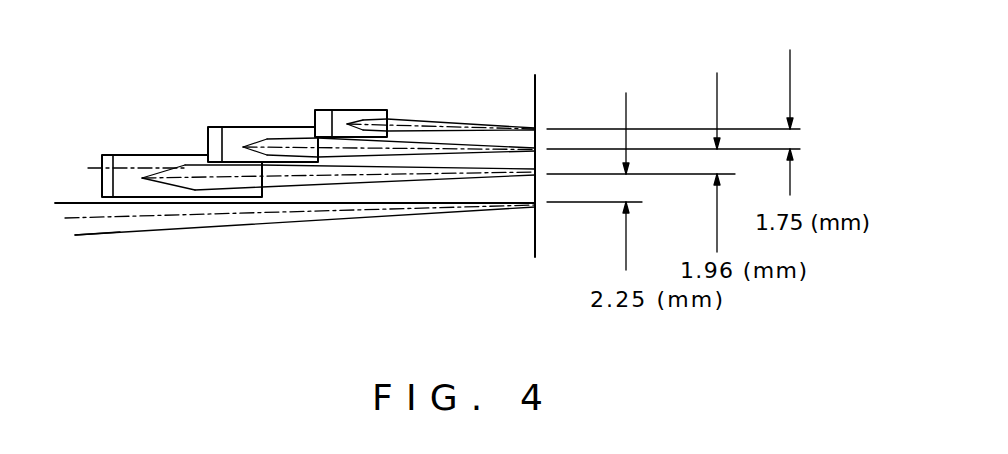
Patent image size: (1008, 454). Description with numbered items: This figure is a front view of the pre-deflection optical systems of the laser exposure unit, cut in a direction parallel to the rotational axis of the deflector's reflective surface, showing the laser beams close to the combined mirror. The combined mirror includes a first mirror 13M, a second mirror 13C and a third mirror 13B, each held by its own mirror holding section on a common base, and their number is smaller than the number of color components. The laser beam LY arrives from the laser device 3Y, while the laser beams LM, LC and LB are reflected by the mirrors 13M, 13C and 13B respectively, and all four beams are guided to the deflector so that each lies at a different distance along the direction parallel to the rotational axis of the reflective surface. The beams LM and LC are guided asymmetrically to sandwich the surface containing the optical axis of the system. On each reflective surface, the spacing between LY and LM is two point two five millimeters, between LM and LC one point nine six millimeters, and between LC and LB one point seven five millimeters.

The first mirror 13M is at (139, 154).
The second mirror 13C is at (248, 126).
The third mirror 13B is at (345, 109).
The laser beam LM is at (398, 183).
The laser beam LC is at (412, 147).
The laser beam LB is at (473, 127).
The laser beam LY is at (480, 206).
The laser device 3Y is at (60, 225).